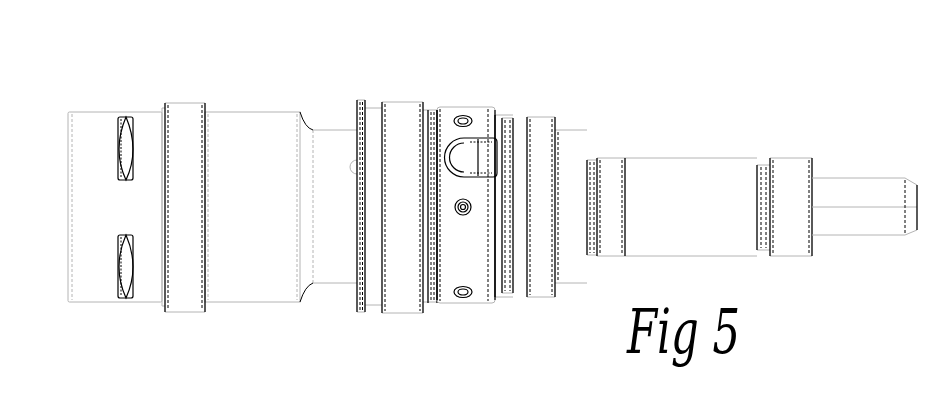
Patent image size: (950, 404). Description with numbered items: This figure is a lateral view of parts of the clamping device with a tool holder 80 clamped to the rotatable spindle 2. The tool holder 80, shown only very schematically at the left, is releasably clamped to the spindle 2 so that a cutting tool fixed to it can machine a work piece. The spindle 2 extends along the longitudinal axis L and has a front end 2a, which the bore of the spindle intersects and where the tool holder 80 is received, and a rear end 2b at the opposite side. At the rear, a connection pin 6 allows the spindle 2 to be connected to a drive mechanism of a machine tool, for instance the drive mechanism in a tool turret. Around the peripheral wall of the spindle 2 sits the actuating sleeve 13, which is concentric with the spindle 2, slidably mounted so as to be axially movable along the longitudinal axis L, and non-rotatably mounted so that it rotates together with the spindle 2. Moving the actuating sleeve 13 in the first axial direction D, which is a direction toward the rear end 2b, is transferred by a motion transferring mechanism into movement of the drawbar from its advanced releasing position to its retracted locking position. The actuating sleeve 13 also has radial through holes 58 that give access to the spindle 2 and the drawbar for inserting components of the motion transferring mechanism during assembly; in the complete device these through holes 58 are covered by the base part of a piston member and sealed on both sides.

The spindle 2 is at (277, 125).
The front end 2a is at (190, 80).
The rear end 2b is at (906, 154).
The connection pin 6 is at (860, 222).
The actuating sleeve 13 is at (446, 298).
The through holes 58 is at (472, 147).
The tool holder 80 is at (108, 120).
The first axial direction D is at (435, 67).
The longitudinal axis L is at (68, 207).